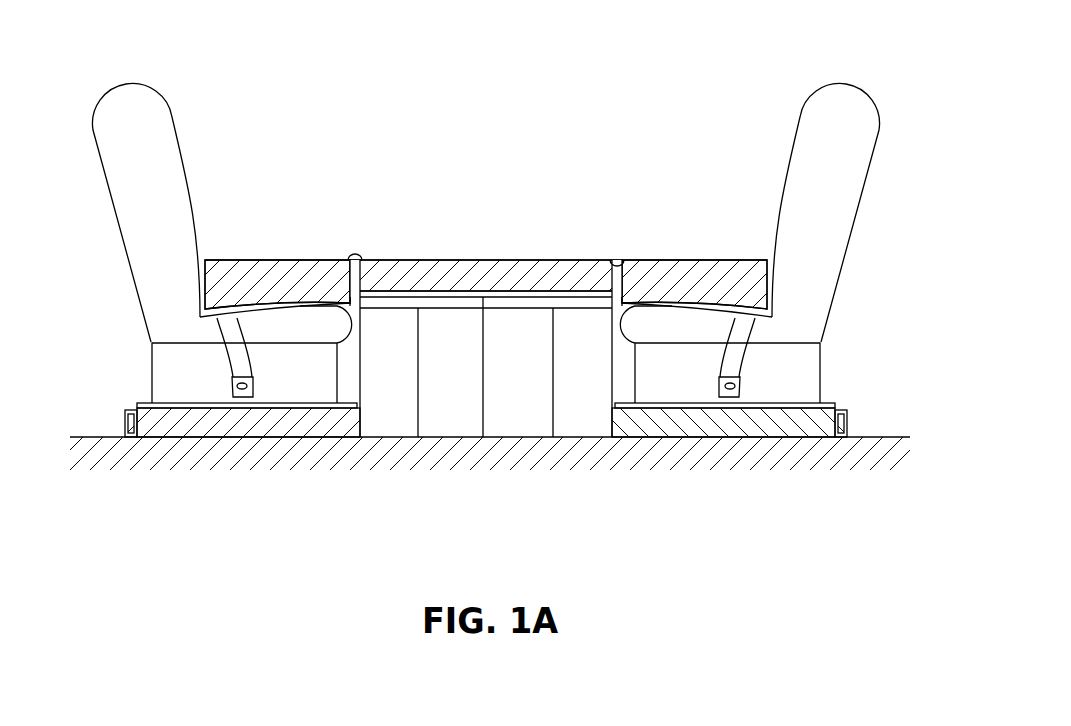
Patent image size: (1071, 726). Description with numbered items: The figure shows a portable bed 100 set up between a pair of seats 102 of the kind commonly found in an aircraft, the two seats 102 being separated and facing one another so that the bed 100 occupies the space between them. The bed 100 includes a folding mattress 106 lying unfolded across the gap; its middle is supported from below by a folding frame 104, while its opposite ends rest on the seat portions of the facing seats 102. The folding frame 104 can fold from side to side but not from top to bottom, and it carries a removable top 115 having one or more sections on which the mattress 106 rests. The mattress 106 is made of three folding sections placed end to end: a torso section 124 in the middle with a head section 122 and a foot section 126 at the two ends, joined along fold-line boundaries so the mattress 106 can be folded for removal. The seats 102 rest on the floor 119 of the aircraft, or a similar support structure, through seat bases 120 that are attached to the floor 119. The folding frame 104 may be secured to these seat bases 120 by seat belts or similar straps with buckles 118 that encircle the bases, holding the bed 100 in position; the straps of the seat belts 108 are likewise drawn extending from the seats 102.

The portable bed 100 is at (593, 166).
The seats 102 is at (117, 79).
The folding frame 104 is at (402, 486).
The folding mattress 106 is at (486, 247).
The seat belt 108 is at (283, 306).
The removable top 115 is at (551, 302).
The straps with buckles 118 is at (848, 416).
The floor 119 is at (880, 438).
The seat bases 120 is at (152, 366).
The head section 122 is at (283, 262).
The torso section 124 is at (510, 260).
The foot section 126 is at (685, 267).